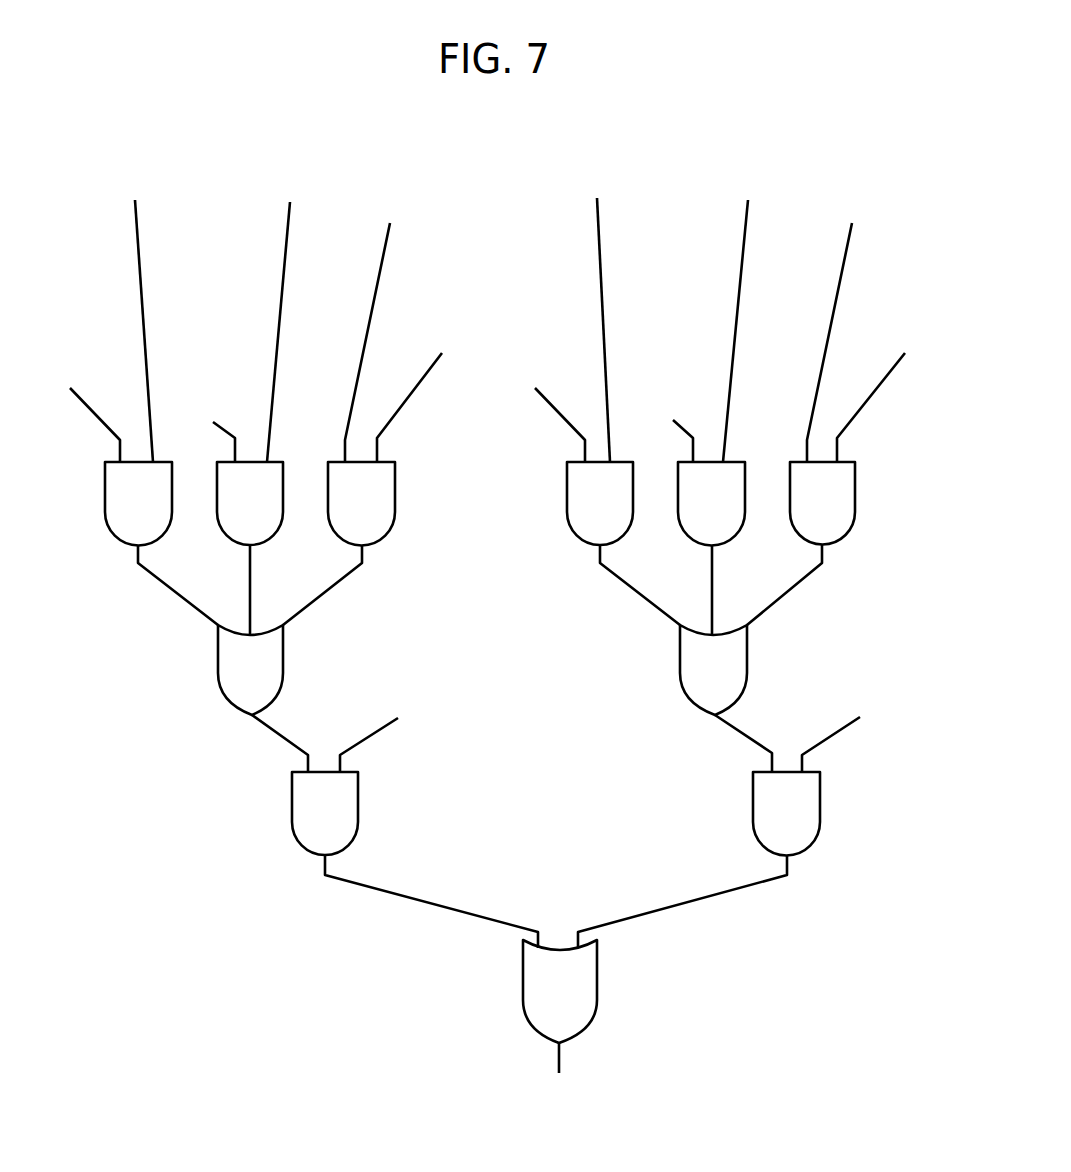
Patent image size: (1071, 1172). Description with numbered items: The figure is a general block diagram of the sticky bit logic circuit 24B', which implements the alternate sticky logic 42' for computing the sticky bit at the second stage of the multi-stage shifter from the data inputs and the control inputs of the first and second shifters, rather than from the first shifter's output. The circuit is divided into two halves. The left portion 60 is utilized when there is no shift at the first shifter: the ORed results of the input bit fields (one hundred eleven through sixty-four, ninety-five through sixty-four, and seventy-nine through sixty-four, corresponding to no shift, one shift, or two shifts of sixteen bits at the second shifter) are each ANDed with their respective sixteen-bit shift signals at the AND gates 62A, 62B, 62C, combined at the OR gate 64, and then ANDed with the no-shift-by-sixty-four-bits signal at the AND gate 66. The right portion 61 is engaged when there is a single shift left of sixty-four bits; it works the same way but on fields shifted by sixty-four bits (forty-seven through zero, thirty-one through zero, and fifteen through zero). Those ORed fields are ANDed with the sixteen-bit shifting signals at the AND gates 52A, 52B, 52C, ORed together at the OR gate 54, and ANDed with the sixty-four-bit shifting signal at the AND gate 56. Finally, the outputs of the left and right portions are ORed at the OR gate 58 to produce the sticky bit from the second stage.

The left portion 60 is at (203, 140).
The right portion 61 is at (758, 140).
The AND gate 62A is at (342, 517).
The AND gate 62B is at (230, 517).
The AND gate 62C is at (118, 517).
The AND gate 52A is at (802, 517).
The AND gate 52B is at (692, 517).
The AND gate 52C is at (580, 517).
The OR gate 64 is at (238, 684).
The OR gate 54 is at (701, 684).
The AND gate 66 is at (311, 826).
The AND gate 56 is at (773, 826).
The OR gate 58 is at (545, 1011).
The alternate sticky logic 42' is at (485, 586).
The sticky bit logic circuit 24B' is at (599, 1065).